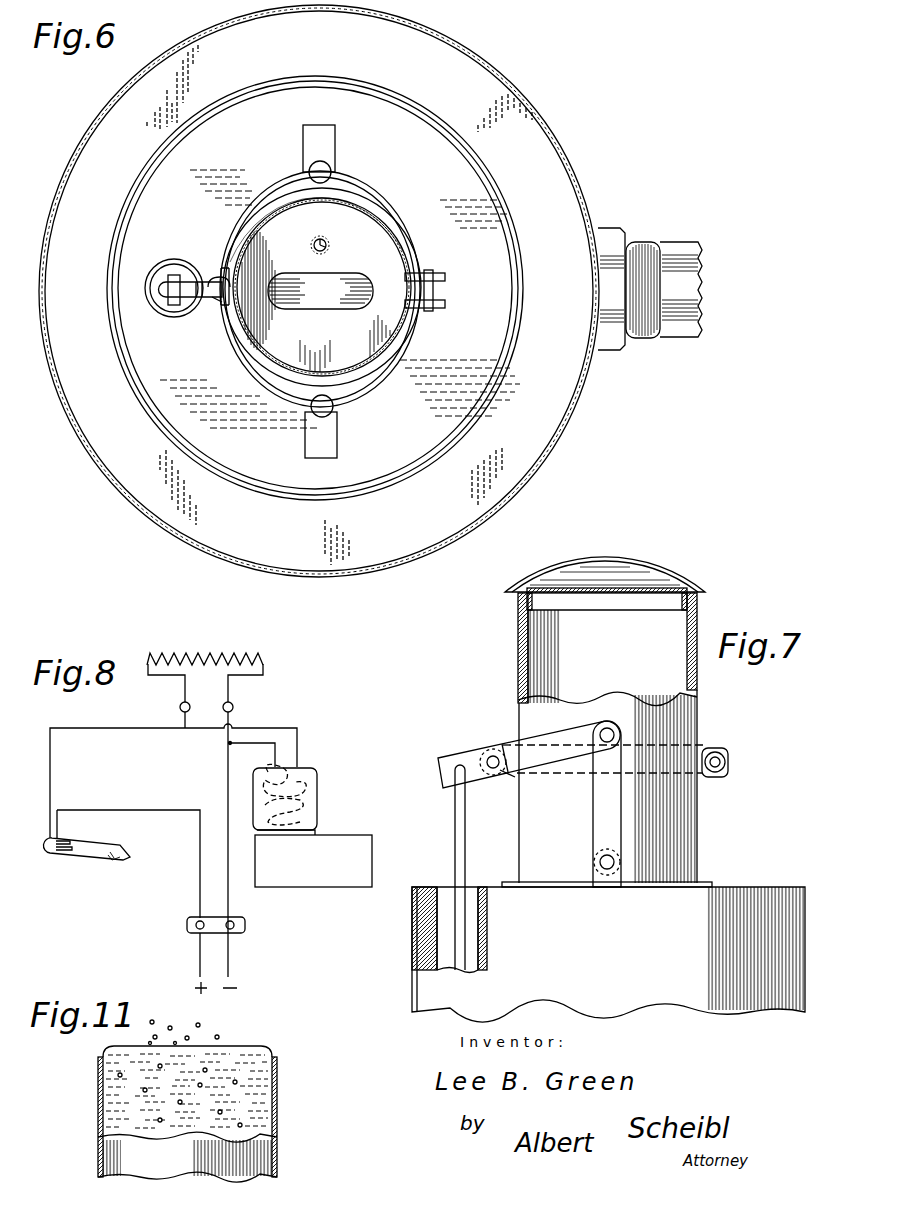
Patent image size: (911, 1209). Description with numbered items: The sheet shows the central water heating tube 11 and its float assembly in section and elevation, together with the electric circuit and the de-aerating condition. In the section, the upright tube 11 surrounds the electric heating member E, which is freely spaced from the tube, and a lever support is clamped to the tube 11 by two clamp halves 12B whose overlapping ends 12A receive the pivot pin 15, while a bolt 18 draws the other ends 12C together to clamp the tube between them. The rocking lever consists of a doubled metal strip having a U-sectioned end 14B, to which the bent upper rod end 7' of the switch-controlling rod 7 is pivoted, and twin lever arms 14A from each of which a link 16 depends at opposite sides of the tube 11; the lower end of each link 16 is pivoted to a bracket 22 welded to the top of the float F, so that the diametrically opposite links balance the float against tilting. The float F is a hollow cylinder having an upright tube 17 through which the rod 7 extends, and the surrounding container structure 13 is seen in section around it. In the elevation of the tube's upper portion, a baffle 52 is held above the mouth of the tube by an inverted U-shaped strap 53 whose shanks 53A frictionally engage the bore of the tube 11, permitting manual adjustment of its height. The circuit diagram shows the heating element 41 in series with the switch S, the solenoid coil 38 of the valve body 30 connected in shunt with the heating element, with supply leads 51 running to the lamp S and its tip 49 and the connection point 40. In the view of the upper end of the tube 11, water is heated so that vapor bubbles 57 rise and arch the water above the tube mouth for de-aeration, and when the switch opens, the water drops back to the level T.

In FIG. 7, the switch-controlling rod 7 is at (472, 867).
In FIG. 6, the bent upper rod end 7' is at (179, 305).
In FIG. 6, the tube 11 is at (411, 330).
In FIG. 7, the tube 11 is at (600, 651).
In FIG. 11, the tube 11 is at (267, 1153).
In FIG. 6, the overlapping ends 12A is at (226, 274).
In FIG. 7, the overlapping ends 12A is at (515, 778).
In FIG. 6, the clamp halves 12B is at (385, 232).
In FIG. 7, the clamp halves 12B is at (663, 765).
In FIG. 6, the other ends of the clamp halves 12C is at (440, 276).
In FIG. 7, the other ends of the clamp halves 12C is at (703, 748).
In FIG. 6, the housing ring 13 is at (545, 122).
In FIG. 6, the lever arm 14A is at (232, 423).
In FIG. 7, the lever arm 14A is at (565, 737).
In FIG. 6, the U-sectioned end 14B is at (188, 296).
In FIG. 6, the pivot pin 15 is at (209, 305).
In FIG. 7, the pivot pin 15 is at (492, 769).
In FIG. 6, the links 16 is at (332, 170).
In FIG. 7, the links 16 is at (605, 813).
In FIG. 7, the upright tube 17 is at (447, 920).
In FIG. 6, the bolt 18 is at (436, 297).
In FIG. 7, the bolt 18 is at (728, 763).
In FIG. 6, the bracket 22 is at (325, 136).
In FIG. 7, the bracket 22 is at (600, 878).
In FIG. 8, the valve body 30 is at (313, 858).
In FIG. 8, the solenoid coil 38 is at (307, 785).
In FIG. 6, the vent opening 40 is at (329, 245).
In FIG. 8, the heating element 41 is at (198, 653).
In FIG. 8, the lamp tip 49 is at (117, 862).
In FIG. 8, the lead wires 51 is at (229, 870).
In FIG. 7, the baffle 52 is at (627, 557).
In FIG. 7, the inverted U-shaped strap 53 is at (635, 588).
In FIG. 7, the shanks 53A is at (690, 603).
In FIG. 11, the vapor bubbles 57 is at (228, 1047).
In FIG. 6, the electric heating member E is at (313, 298).
In FIG. 6, the float F is at (386, 426).
In FIG. 7, the float F is at (608, 952).
In FIG. 8, the switch S is at (87, 851).
In FIG. 11, the level T is at (243, 1088).